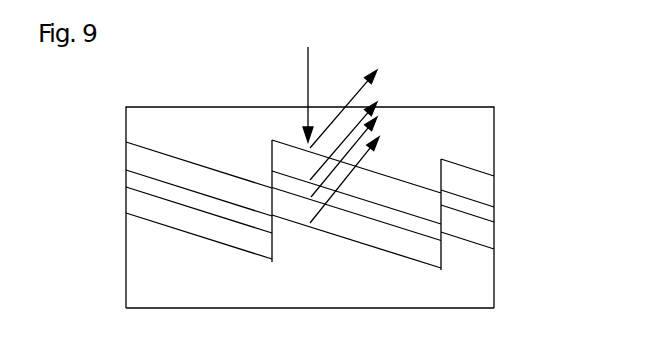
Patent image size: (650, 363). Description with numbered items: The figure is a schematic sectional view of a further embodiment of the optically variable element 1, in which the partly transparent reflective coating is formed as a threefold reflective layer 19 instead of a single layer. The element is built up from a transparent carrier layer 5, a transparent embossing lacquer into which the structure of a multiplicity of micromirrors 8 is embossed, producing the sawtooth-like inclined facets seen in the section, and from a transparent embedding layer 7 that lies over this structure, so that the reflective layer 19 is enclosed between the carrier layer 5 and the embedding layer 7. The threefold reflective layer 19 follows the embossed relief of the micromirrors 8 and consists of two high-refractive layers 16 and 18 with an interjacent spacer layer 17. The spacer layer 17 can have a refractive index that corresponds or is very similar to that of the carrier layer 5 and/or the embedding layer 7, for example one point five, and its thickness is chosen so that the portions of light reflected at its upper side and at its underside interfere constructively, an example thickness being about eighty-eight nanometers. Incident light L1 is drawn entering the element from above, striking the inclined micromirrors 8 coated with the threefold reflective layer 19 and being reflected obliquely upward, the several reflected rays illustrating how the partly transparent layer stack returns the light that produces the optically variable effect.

The optically variable element 1 is at (322, 162).
The transparent carrier layer 5 is at (487, 275).
The transparent embedding layer 7 is at (487, 116).
The micromirrors 8 is at (142, 144).
The high-refractive layer 16 is at (487, 237).
The spacer layer 17 is at (487, 215).
The high-refractive layer 18 is at (487, 191).
The threefold reflective layer 19 is at (124, 209).
The incident light L1 is at (307, 78).